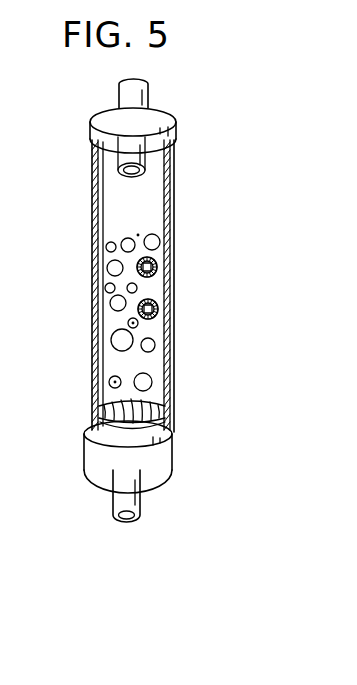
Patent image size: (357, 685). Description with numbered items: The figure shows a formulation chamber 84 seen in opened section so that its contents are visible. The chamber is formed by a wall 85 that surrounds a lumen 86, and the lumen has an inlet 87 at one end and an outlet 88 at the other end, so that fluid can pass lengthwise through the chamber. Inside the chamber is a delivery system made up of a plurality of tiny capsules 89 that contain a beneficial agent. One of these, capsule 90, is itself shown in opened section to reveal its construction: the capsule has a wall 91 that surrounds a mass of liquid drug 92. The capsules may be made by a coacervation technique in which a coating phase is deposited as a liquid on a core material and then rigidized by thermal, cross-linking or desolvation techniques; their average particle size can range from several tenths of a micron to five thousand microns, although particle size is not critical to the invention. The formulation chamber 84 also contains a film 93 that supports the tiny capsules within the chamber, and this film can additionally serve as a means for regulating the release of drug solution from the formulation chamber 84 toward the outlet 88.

The formulation chamber 84 is at (145, 286).
The wall 85 is at (92, 228).
The lumen 86 is at (118, 198).
The inlet 87 is at (183, 134).
The outlet 88 is at (95, 448).
The tiny capsules 89 is at (150, 376).
The capsule 90 is at (157, 257).
The capsule wall 91 is at (157, 263).
The liquid drug 92 is at (158, 282).
The film 93 is at (165, 402).